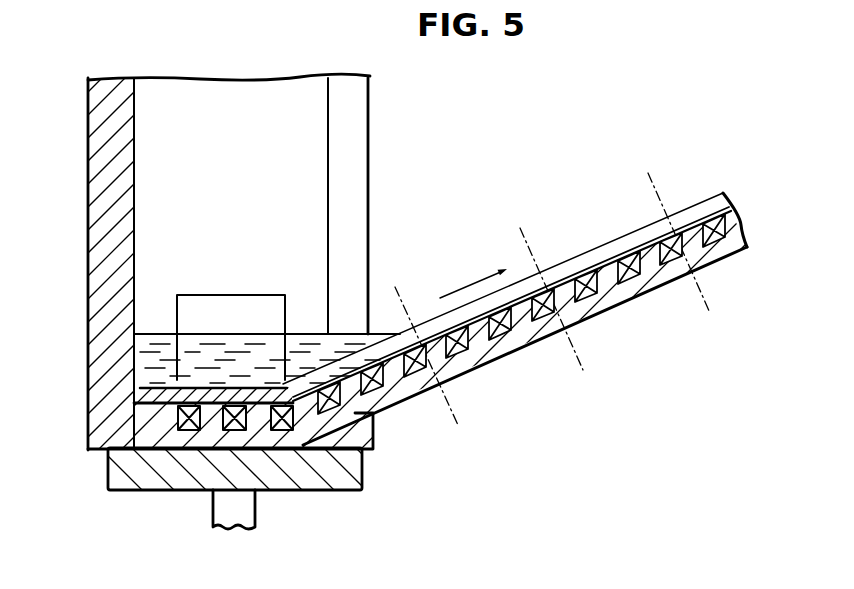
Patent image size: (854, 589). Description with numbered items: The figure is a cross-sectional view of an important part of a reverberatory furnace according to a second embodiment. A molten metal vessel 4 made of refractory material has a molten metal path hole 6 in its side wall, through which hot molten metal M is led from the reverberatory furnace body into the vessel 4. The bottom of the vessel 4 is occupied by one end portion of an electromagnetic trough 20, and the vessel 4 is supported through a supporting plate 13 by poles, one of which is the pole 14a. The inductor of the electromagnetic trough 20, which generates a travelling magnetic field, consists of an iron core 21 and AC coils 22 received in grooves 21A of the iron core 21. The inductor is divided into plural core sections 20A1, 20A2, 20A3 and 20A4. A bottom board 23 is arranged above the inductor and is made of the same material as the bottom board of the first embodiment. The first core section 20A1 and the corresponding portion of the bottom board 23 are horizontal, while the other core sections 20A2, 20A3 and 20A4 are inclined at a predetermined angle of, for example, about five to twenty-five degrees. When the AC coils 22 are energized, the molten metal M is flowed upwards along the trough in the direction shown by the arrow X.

The molten metal vessel 4 is at (209, 74).
The molten metal path hole 6 is at (208, 295).
The hot molten metal M is at (312, 334).
The supporting plate 13 is at (295, 396).
The pole 14a is at (237, 518).
The electromagnetic trough 20 is at (558, 373).
The first core section 20A1 is at (192, 432).
The core section 20A2 is at (397, 400).
The core section 20A3 is at (513, 351).
The core section 20A4 is at (620, 290).
The iron core 21 is at (359, 435).
The groove of iron core 21A is at (627, 235).
The AC coil 22 is at (462, 357).
The bottom board 23 is at (562, 270).
The arrow indicating flow direction X is at (463, 290).